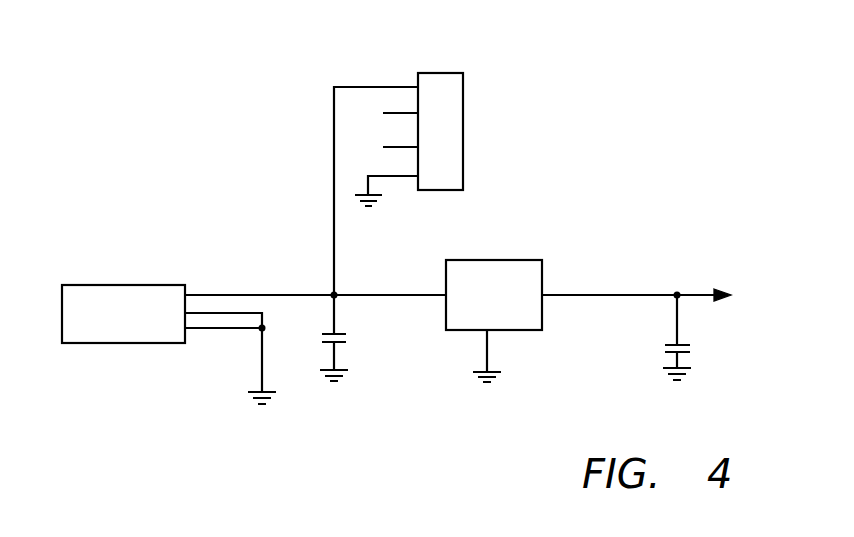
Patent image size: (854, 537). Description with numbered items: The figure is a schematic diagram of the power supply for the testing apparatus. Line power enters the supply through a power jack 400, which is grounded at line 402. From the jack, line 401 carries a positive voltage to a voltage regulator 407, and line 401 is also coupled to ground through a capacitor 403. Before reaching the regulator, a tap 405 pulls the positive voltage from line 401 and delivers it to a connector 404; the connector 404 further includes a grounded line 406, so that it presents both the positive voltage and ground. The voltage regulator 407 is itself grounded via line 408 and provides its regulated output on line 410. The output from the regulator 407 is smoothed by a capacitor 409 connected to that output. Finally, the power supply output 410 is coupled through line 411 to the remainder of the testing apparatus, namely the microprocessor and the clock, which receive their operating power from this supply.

The power jack 400 is at (82, 287).
The line 401 is at (297, 292).
The line 402 is at (261, 362).
The capacitor 403 is at (348, 338).
The connector 404 is at (460, 83).
The tap 405 is at (334, 128).
The grounded line 406 is at (383, 176).
The voltage regulator 407 is at (503, 266).
The line 408 is at (488, 352).
The capacitor 409 is at (693, 350).
The line 410 is at (560, 293).
The line 411 is at (722, 290).